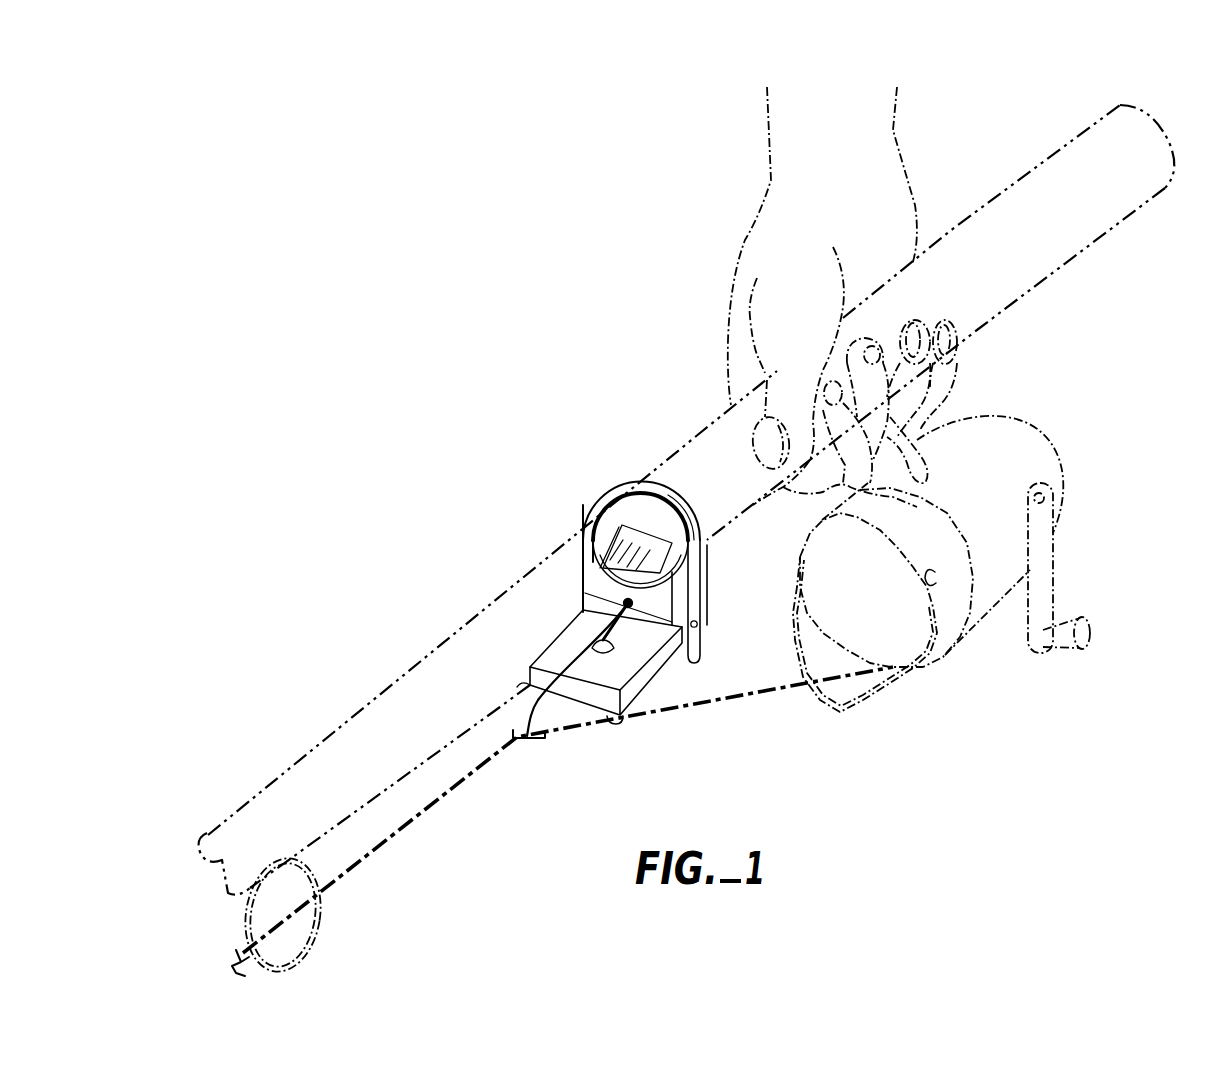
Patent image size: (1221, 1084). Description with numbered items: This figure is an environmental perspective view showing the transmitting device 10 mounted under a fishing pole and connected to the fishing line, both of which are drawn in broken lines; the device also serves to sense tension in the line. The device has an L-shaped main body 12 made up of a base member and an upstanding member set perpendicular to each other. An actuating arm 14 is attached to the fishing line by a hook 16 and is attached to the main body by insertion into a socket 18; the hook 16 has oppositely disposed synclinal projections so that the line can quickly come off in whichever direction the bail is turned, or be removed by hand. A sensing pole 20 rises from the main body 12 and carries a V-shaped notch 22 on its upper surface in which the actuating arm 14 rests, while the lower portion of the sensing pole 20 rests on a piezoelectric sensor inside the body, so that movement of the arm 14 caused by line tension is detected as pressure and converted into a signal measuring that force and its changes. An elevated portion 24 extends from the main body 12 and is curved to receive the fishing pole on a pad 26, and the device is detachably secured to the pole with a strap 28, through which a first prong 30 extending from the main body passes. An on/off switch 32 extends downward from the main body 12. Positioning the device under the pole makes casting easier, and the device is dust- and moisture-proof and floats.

The transmitting device 10 is at (544, 647).
The L-shaped main body 12 is at (690, 660).
The actuating arm 14 is at (514, 697).
The hook 16 is at (533, 740).
The socket 18 is at (583, 589).
The sensing pole 20 is at (670, 660).
The V-shaped notch 22 is at (583, 618).
The elevated portion 24 is at (583, 561).
The pad 26 is at (603, 500).
The strap 28 is at (646, 486).
The first prong 30 is at (712, 628).
The on/off switch 32 is at (610, 721).